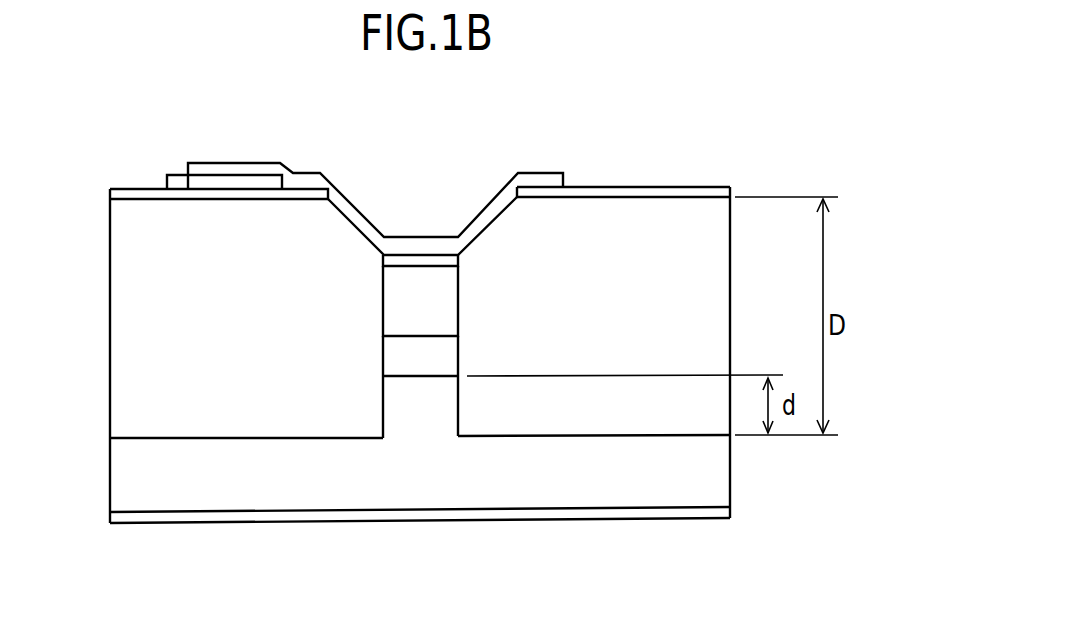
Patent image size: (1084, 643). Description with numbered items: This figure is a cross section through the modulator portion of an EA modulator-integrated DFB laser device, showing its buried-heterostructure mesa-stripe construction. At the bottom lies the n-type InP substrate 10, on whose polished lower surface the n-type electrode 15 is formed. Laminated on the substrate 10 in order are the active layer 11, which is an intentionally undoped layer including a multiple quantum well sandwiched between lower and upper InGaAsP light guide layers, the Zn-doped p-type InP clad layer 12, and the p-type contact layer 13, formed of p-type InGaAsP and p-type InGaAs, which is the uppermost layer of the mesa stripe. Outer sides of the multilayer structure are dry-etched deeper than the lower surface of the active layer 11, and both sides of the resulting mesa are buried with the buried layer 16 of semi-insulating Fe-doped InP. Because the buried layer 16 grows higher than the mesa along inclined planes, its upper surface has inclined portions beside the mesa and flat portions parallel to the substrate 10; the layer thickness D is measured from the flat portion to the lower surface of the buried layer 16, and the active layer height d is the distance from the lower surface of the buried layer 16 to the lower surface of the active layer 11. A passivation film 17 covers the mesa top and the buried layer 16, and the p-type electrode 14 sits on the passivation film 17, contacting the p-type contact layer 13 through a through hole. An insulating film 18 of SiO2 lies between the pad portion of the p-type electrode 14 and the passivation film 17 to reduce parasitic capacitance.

The n-type InP substrate 10 is at (233, 498).
The active layer 11 is at (420, 358).
The p-type InP clad layer 12 is at (437, 287).
The p-type contact layer 13 is at (403, 263).
The p-type electrode 14 is at (263, 170).
The n-type electrode 15 is at (333, 513).
The buried layer 16 is at (142, 220).
The passivation film 17 is at (310, 197).
The insulating film 18 is at (208, 182).